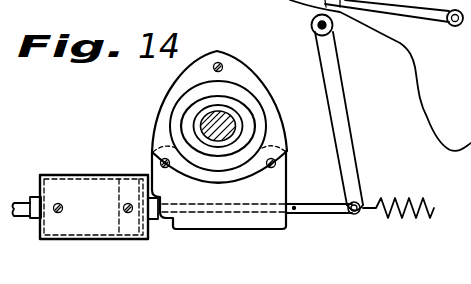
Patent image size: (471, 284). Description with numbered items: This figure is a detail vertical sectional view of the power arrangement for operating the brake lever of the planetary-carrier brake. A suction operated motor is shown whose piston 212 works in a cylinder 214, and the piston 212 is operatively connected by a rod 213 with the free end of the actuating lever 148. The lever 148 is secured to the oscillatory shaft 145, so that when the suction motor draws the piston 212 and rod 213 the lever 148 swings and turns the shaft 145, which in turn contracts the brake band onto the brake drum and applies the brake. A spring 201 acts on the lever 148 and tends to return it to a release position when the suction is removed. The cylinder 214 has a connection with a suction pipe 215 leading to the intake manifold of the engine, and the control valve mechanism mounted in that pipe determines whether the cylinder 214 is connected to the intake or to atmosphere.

The oscillatory shaft 145 is at (316, 32).
The actuating lever 148 is at (352, 138).
The spring 201 is at (389, 195).
The piston 212 is at (118, 212).
The rod 213 is at (312, 216).
The cylinder 214 is at (78, 191).
The suction pipe 215 is at (19, 200).